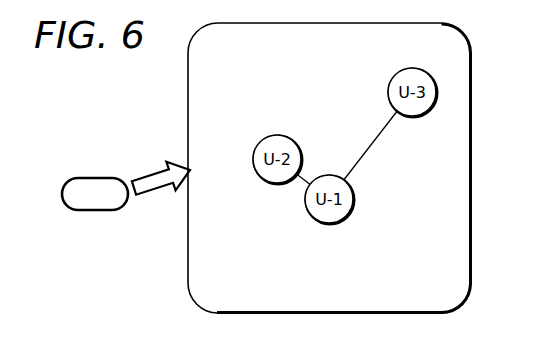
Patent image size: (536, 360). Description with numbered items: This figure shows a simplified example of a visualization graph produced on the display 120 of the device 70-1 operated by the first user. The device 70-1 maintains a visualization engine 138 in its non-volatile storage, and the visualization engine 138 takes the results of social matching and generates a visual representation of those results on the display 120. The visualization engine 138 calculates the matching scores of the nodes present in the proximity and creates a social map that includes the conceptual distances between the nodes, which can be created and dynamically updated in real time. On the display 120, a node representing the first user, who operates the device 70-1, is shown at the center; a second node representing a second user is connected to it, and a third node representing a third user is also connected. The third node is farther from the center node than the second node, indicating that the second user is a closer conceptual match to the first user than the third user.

The device 70-1 is at (152, 118).
The visualization engine 138 is at (111, 203).
The display 120 is at (188, 244).